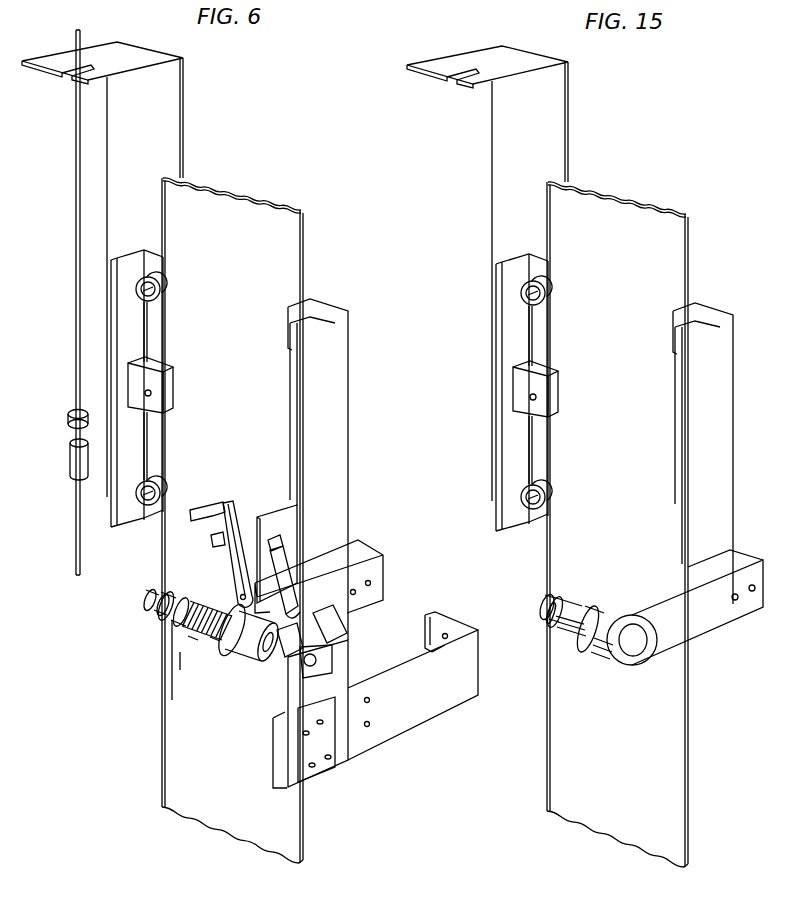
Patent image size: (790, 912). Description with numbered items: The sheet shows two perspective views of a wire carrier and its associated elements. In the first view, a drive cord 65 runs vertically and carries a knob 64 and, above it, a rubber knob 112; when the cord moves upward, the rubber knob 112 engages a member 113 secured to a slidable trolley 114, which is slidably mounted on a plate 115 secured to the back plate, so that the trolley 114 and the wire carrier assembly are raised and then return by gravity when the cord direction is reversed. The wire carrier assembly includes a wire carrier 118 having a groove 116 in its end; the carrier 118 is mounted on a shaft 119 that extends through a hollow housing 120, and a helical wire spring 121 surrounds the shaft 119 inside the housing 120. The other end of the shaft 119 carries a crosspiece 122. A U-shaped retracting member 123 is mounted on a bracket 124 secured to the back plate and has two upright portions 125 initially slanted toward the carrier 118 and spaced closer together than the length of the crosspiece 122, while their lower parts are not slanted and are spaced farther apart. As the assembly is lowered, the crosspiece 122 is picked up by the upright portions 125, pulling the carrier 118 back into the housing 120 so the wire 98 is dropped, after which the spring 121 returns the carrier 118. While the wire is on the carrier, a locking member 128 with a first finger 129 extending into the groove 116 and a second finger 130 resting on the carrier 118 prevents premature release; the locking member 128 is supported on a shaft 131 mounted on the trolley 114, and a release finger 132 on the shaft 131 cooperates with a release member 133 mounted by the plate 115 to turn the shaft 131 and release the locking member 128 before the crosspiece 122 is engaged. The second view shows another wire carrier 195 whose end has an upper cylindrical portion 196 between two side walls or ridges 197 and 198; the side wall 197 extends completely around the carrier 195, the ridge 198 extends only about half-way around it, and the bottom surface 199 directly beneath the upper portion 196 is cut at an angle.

In FIG. 6, the drive cord 65 is at (75, 180).
In FIG. 6, the rubber knob 112 is at (68, 416).
In FIG. 6, the knob 64 is at (70, 459).
In FIG. 6, the member 113 is at (127, 62).
In FIG. 15, the member 113 is at (487, 273).
In FIG. 6, the trolley 114 is at (337, 418).
In FIG. 6, the plate 115 is at (258, 212).
In FIG. 15, the plate 115 is at (617, 521).
In FIG. 6, the groove 116 is at (158, 592).
In FIG. 6, the wire carrier 118 is at (158, 602).
In FIG. 6, the shaft 119 is at (207, 600).
In FIG. 6, the wire 98 is at (173, 643).
In FIG. 6, the hollow housing 120 is at (193, 642).
In FIG. 6, the helical wire spring 121 is at (214, 643).
In FIG. 6, the crosspiece 122 is at (325, 651).
In FIG. 6, the U-shaped retracting member 123 is at (338, 690).
In FIG. 6, the bracket 124 is at (435, 705).
In FIG. 6, the upright portions 125 is at (338, 628).
In FIG. 6, the locking member 128 is at (228, 552).
In FIG. 6, the first finger 129 is at (208, 507).
In FIG. 6, the second finger 130 is at (211, 538).
In FIG. 6, the shaft 131 is at (350, 550).
In FIG. 6, the release finger 132 is at (288, 546).
In FIG. 6, the release member 133 is at (292, 514).
In FIG. 15, the wire carrier 195 is at (596, 647).
In FIG. 15, the upper cylindrical portion 196 is at (569, 604).
In FIG. 15, the side wall 197 is at (578, 605).
In FIG. 15, the ridge 198 is at (553, 598).
In FIG. 15, the bottom surface 199 is at (548, 619).